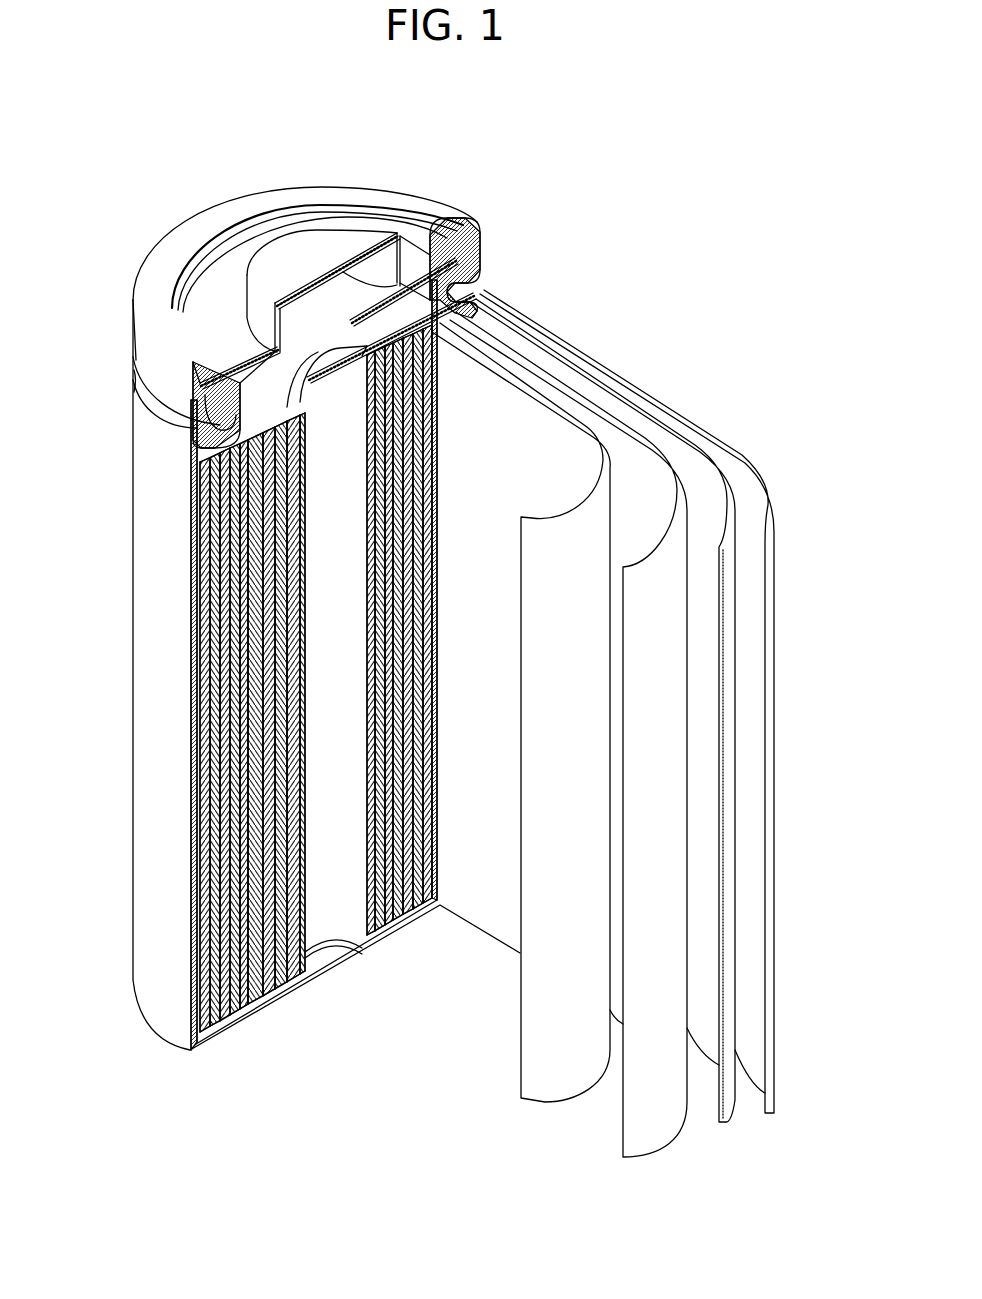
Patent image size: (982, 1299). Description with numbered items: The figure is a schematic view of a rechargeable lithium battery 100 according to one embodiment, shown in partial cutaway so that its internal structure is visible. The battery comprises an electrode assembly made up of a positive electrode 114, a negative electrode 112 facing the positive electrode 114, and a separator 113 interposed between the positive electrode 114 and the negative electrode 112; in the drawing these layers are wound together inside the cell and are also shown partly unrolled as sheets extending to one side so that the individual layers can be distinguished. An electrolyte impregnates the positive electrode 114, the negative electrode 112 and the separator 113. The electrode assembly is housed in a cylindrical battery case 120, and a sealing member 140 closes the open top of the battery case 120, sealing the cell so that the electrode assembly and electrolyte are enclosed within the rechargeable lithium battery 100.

The rechargeable lithium battery 100 is at (570, 174).
The negative electrode 112 is at (767, 507).
The separator 113 is at (555, 397).
The positive electrode 114 is at (620, 437).
The battery case 120 is at (155, 627).
The sealing member 140 is at (317, 252).